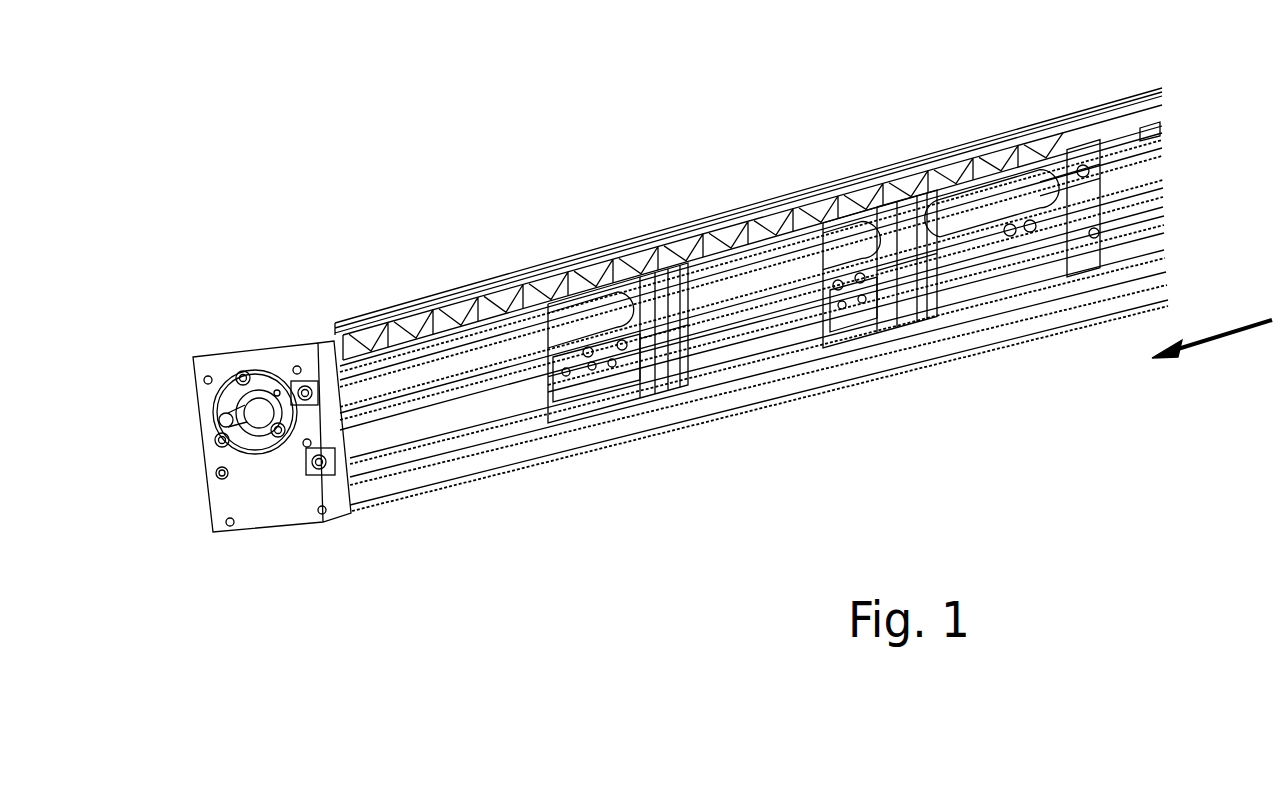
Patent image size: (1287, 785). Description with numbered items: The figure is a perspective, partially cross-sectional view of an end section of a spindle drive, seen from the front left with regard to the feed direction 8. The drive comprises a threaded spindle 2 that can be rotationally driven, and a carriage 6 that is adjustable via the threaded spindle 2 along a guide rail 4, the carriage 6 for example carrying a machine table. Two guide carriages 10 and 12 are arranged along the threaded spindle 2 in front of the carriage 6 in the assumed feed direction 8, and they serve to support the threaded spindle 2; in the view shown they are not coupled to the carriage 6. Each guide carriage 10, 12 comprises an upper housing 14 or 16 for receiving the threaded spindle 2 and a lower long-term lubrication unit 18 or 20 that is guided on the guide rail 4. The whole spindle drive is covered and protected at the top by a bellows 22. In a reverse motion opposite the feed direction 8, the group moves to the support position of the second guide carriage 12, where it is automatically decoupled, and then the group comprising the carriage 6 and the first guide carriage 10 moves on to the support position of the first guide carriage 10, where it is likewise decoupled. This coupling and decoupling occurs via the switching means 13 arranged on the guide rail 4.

The threaded spindle 2 is at (753, 280).
The guide rail 4 is at (403, 442).
The carriage 6 is at (1097, 137).
The feed direction 8 is at (1226, 337).
The first guide carriage 10 is at (914, 203).
The second guide carriage 12 is at (672, 270).
The switching means 13 is at (799, 292).
The upper housing 14 is at (908, 262).
The upper housing 16 is at (653, 325).
The long-term lubrication unit 18 is at (912, 306).
The long-term lubrication unit 20 is at (668, 368).
The bellows 22 is at (450, 284).